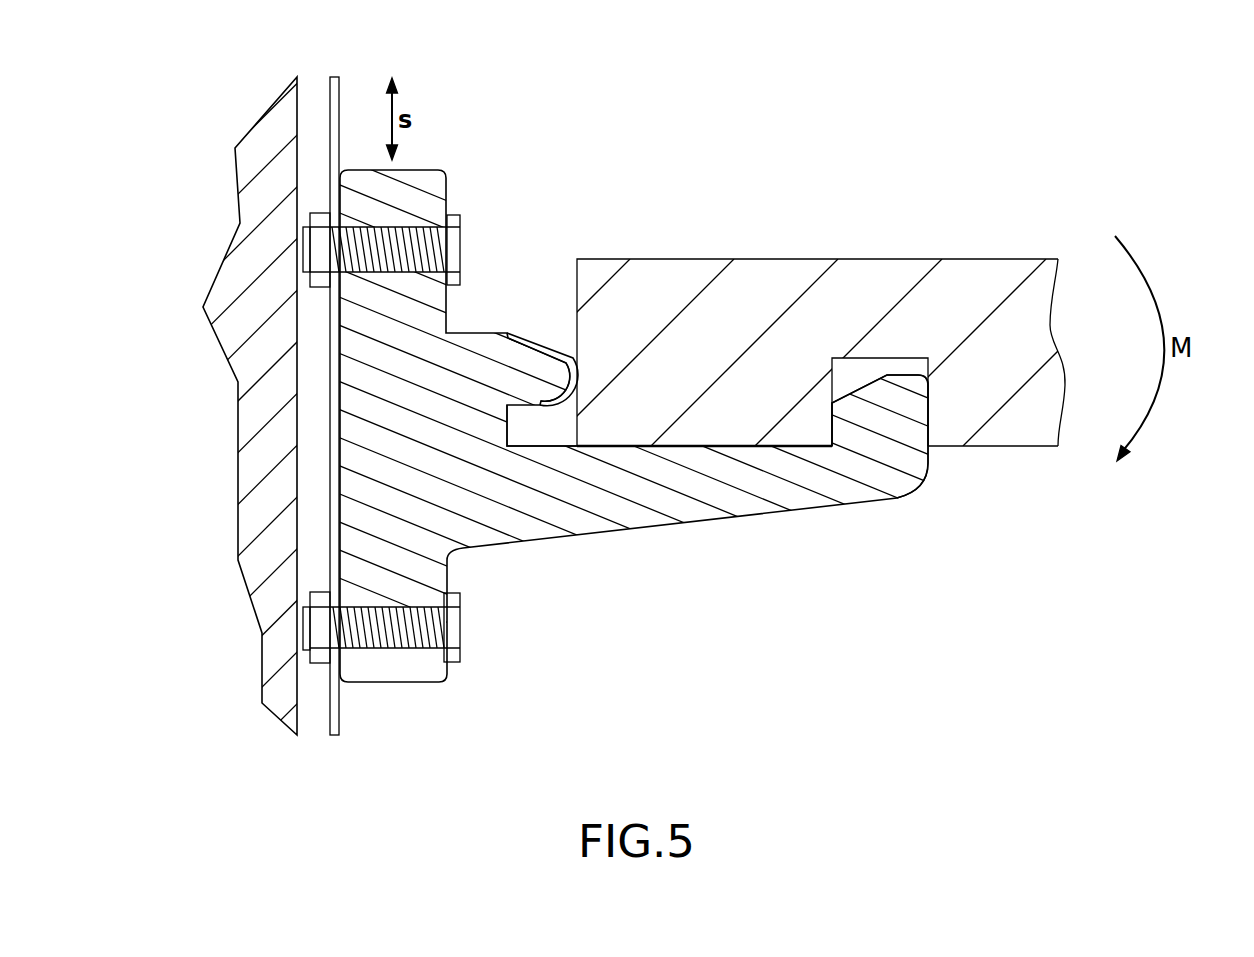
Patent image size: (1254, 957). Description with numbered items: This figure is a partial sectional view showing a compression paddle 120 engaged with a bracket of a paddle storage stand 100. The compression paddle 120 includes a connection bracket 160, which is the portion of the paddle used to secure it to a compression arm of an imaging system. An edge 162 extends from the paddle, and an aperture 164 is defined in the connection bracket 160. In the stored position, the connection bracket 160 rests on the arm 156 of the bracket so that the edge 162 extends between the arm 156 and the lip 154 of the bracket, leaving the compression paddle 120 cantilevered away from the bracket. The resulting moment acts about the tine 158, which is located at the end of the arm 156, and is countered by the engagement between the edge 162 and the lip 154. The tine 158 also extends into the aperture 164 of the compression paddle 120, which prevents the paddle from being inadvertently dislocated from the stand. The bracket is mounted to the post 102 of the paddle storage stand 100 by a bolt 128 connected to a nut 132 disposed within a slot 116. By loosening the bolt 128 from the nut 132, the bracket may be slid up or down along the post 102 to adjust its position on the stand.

The paddle storage stand 100 is at (1145, 160).
The post 102 is at (278, 650).
The slot 116 is at (313, 730).
The compression paddle 120 is at (1029, 295).
The bolt 128 is at (452, 627).
The nut 132 is at (320, 655).
The lip 154 is at (515, 363).
The arm 156 is at (712, 492).
The tine 158 is at (880, 422).
The connection bracket 160 is at (758, 259).
The edge 162 is at (533, 430).
The aperture 164 is at (863, 371).